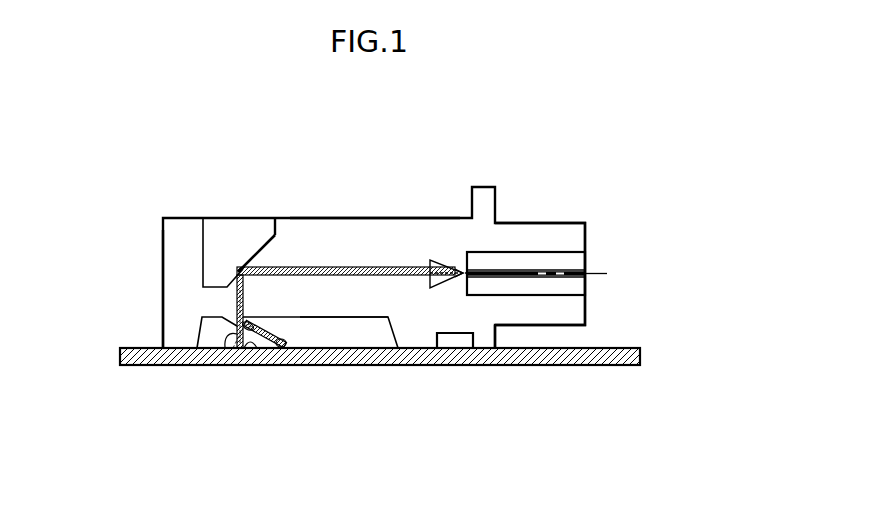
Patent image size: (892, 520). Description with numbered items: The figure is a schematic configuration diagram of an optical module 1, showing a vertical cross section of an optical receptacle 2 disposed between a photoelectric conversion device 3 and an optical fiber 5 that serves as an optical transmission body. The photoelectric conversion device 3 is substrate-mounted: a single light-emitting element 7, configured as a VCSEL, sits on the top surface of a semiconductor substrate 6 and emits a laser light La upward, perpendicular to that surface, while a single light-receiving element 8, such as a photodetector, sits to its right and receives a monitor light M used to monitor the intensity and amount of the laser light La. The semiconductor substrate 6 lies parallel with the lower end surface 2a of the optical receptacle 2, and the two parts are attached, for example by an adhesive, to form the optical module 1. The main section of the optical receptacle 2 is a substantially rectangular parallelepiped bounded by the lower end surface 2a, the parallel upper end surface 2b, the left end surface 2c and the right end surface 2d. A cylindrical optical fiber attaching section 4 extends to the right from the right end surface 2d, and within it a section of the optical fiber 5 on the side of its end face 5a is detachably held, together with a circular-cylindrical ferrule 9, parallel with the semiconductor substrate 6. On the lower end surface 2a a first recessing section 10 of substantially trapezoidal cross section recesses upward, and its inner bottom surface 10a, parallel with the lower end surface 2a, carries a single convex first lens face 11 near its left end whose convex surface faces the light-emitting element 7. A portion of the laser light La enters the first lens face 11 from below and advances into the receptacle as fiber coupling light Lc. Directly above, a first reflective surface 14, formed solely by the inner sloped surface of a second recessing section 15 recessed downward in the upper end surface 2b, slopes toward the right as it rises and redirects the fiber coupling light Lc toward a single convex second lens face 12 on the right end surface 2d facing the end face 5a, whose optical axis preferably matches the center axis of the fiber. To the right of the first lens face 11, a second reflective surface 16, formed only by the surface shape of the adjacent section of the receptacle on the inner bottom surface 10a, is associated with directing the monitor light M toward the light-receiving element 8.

The optical module 1 is at (118, 143).
The optical receptacle 2 is at (162, 247).
The lower end surface 2a is at (173, 366).
The upper end surface 2b is at (347, 217).
The left end surface 2c is at (162, 282).
The right end surface 2d is at (440, 338).
The photoelectric conversion device 3 is at (308, 443).
The optical fiber attaching section 4 is at (532, 222).
The optical fiber 5 is at (527, 277).
The end face 5a is at (462, 280).
The semiconductor substrate 6 is at (313, 365).
The light-emitting element 7 is at (250, 350).
The light-receiving element 8 is at (268, 352).
The ferrule 9 is at (495, 327).
The first recessing section 10 is at (365, 332).
The inner bottom surface 10a is at (327, 318).
The first lens face 11 is at (228, 334).
The second lens face 12 is at (442, 258).
The first reflective surface 14 is at (250, 262).
The second recessing section 15 is at (217, 233).
The second reflective surface 16 is at (250, 323).
The monitor light M is at (263, 322).
The laser light La is at (233, 344).
The fiber coupling light Lc is at (330, 277).